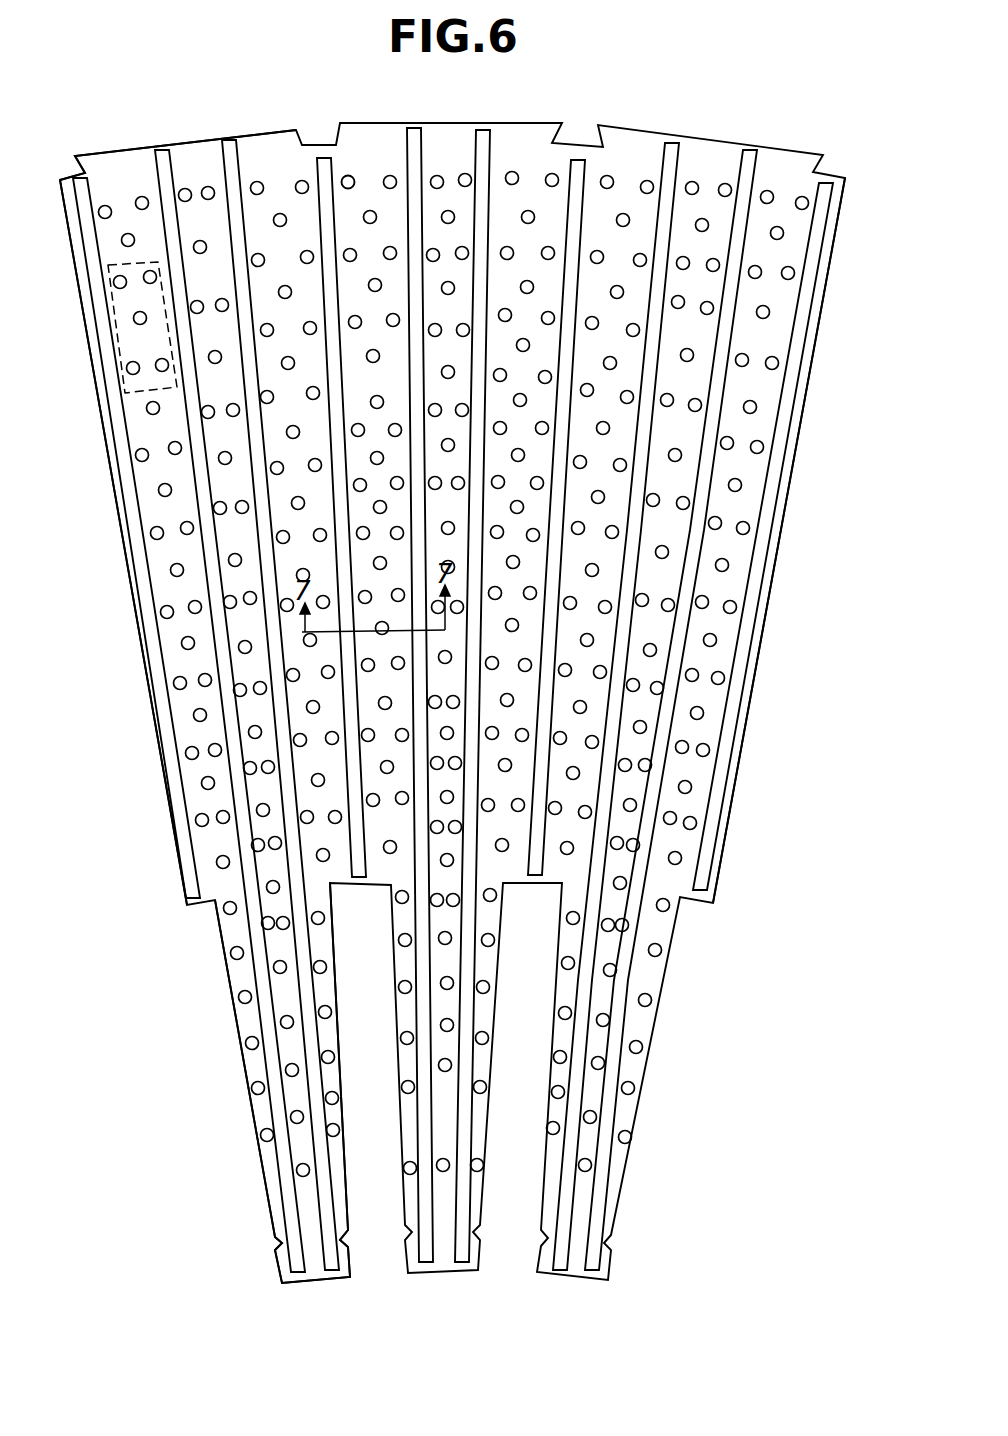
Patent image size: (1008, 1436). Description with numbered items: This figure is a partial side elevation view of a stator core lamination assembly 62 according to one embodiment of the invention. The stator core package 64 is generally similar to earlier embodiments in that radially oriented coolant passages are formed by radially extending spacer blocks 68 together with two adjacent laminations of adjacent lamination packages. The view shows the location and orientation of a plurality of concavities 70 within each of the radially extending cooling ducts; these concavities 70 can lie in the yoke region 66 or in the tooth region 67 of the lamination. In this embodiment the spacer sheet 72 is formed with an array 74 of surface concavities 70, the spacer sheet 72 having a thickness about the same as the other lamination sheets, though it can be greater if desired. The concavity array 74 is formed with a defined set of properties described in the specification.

The stator core lamination assembly 62 is at (470, 669).
The stator core package 64 is at (833, 252).
The yoke region 66 is at (133, 597).
The tooth region 67 is at (220, 993).
The spacer block 68 is at (668, 185).
The concavity 70 is at (350, 176).
The spacer sheet 72 is at (118, 165).
The array of surface concavities 74 is at (108, 320).